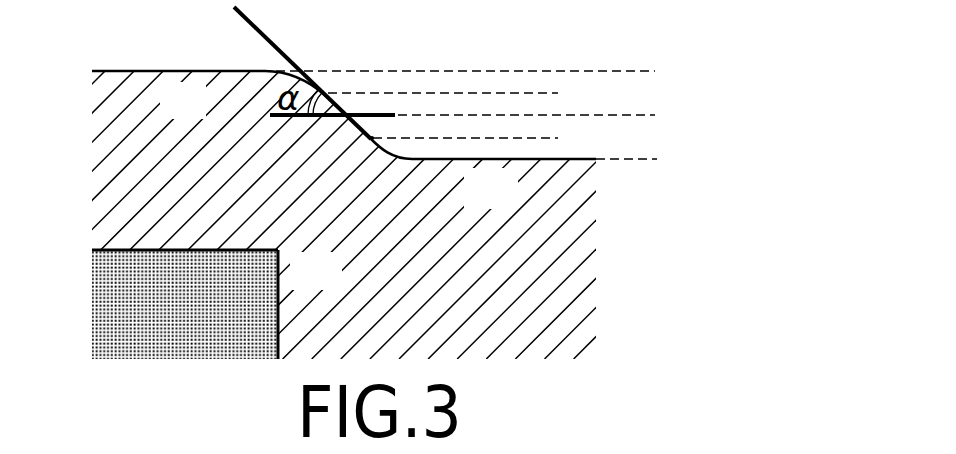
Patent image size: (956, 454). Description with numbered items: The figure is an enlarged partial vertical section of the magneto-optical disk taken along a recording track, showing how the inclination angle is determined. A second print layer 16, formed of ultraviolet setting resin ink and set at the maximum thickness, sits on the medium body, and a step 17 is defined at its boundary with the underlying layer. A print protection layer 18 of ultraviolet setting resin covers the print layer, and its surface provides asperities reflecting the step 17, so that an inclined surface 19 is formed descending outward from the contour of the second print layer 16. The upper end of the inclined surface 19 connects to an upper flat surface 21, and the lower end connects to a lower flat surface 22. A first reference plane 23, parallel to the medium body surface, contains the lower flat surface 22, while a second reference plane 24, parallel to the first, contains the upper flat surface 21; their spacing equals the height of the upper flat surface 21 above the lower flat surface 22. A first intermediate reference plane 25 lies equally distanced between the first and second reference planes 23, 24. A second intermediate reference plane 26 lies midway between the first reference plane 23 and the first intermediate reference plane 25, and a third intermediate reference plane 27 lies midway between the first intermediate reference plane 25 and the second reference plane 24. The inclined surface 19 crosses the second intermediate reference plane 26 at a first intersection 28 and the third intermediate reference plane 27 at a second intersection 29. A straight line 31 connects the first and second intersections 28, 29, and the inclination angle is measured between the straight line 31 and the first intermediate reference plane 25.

The second print layer 16 is at (113, 250).
The step 17 is at (279, 302).
The print protection layer 18 is at (107, 72).
The inclined surface 19 is at (341, 106).
The upper flat surface 21 is at (152, 73).
The lower flat surface 22 is at (462, 160).
The first reference plane 23 is at (641, 160).
The second reference plane 24 is at (643, 71).
The first intermediate reference plane 25 is at (641, 114).
The second intermediate reference plane 26 is at (530, 138).
The third intermediate reference plane 27 is at (530, 92).
The first intersection 28 is at (373, 139).
The second intersection 29 is at (317, 92).
The straight line 31 is at (247, 17).